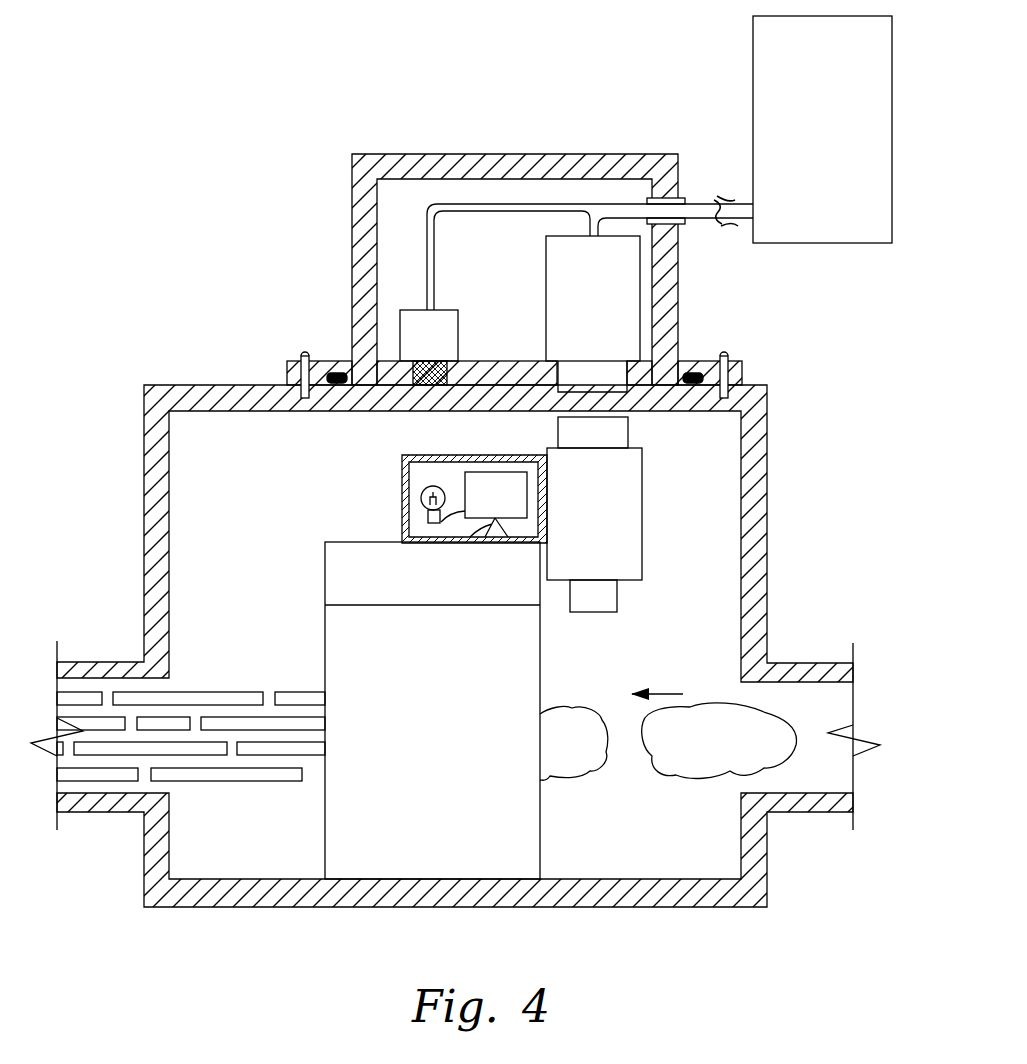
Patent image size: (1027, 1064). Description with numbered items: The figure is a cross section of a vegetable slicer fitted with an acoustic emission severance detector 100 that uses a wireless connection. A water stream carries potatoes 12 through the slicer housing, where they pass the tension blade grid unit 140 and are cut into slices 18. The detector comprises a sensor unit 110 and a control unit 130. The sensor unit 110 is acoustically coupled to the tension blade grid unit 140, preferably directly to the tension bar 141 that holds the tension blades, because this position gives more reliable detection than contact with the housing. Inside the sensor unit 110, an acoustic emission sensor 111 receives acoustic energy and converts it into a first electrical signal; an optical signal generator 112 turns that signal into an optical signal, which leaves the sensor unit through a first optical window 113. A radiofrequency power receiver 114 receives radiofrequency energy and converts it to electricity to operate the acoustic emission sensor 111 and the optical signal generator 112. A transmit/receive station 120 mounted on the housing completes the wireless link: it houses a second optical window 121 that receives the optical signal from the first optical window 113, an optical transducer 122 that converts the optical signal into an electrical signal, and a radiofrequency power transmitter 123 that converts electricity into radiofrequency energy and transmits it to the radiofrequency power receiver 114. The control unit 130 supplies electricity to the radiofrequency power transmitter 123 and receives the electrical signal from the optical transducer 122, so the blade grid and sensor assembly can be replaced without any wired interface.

The potatoes 12 is at (664, 794).
The slices 18 is at (228, 788).
The acoustic emission severance detector 100 is at (663, 468).
The sensor unit 110 is at (642, 514).
The acoustic emission sensor 111 is at (438, 503).
The optical signal generator 112 is at (457, 483).
The first optical window 113 is at (430, 460).
The radiofrequency power receiver 114 is at (642, 556).
The transmit/receive station 120 is at (690, 323).
The second optical window 121 is at (438, 385).
The optical transducer 122 is at (459, 323).
The radiofrequency power transmitter 123 is at (546, 252).
The control unit 130 is at (748, 48).
The tension blade grid unit 140 is at (447, 710).
The tension bar 141 is at (325, 572).